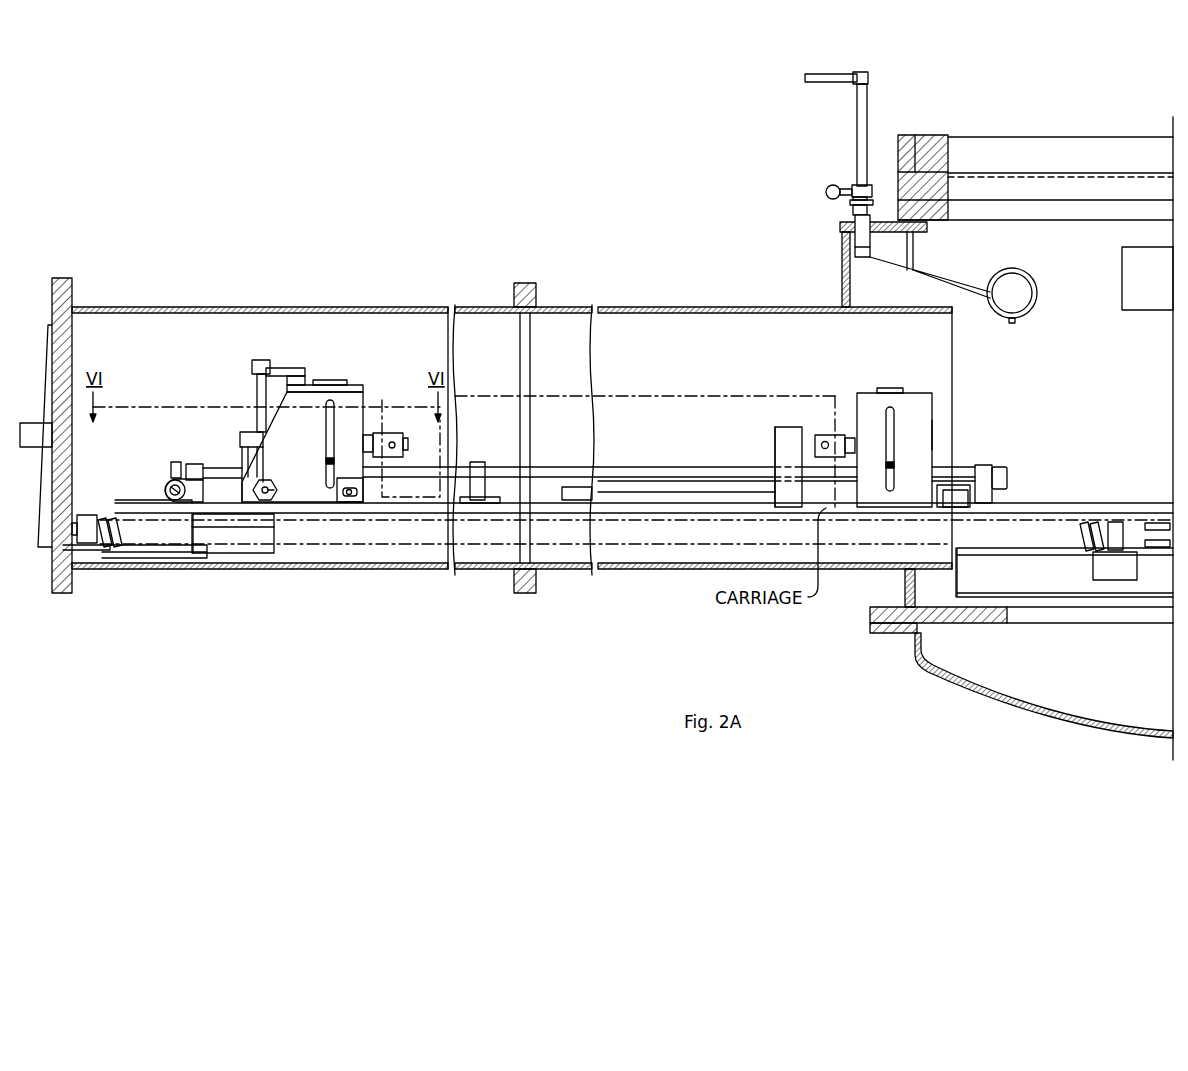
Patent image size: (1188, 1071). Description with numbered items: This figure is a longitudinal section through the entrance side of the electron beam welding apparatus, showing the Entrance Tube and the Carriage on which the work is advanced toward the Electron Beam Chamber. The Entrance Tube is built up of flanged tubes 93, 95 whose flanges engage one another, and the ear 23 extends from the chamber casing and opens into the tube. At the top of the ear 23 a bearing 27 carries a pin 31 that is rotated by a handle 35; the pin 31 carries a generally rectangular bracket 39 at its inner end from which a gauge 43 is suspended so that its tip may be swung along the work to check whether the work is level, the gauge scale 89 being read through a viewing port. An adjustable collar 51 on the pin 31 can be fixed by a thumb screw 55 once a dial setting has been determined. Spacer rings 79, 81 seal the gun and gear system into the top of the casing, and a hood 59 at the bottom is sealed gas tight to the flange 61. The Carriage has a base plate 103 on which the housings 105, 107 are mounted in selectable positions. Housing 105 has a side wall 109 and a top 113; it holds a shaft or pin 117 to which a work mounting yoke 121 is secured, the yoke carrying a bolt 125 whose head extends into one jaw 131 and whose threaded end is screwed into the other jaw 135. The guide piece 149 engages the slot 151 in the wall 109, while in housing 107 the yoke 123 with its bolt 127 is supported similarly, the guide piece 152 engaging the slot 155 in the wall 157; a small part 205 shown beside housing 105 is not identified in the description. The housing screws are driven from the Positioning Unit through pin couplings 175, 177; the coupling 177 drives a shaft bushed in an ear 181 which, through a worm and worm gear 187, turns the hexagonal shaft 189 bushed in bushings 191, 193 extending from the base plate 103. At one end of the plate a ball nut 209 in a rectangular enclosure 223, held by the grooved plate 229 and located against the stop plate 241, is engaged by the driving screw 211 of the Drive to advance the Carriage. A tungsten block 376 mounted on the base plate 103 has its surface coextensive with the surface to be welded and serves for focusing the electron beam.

The flanged tube 95 is at (282, 308).
The flanged tube 93 is at (694, 308).
The housing 105 is at (283, 420).
The side wall 109 is at (308, 396).
The top 113 is at (342, 384).
The slot 151 is at (326, 430).
The shaft or pin 117 is at (368, 436).
The work mounting yoke 121 is at (390, 433).
The bolt 125 is at (402, 445).
The jaw 131 is at (401, 450).
The guide piece 149 is at (328, 466).
The nut 205 is at (273, 487).
The pin coupling 175 is at (340, 496).
The worm gear 187 is at (178, 464).
The ear 181 is at (173, 480).
The bushing 191 is at (208, 467).
The pin coupling 177 is at (164, 490).
The driving screw 211 is at (106, 524).
The grooved plate 229 is at (233, 533).
The rectangular enclosure 223 is at (262, 550).
The overhanging stop plate 241 is at (193, 556).
The ball nut 209 is at (186, 540).
The shaft of hexagonal section 189 is at (648, 470).
The base plate 103 is at (705, 503).
The tungsten block 376 is at (775, 441).
The jaw 135 is at (816, 437).
The work mounting yoke 123 is at (826, 441).
The bolt 127 is at (832, 440).
The housing 107 is at (928, 436).
The slot 155 is at (893, 420).
The guide piece 152 is at (891, 470).
The wall 157 is at (933, 432).
The bushing 193 is at (985, 465).
The flange 61 is at (872, 618).
The hood 59 is at (916, 676).
The handle 35 is at (838, 73).
The pin 31 is at (856, 108).
The spacer ring 79 is at (911, 135).
The spacer ring 81 is at (932, 143).
The thumb screw 55 is at (831, 188).
The adjustable collar 51 is at (852, 185).
The bearing 27 is at (885, 220).
The ear chamber 23 is at (840, 226).
The bracket 39 is at (928, 276).
The gauge scale 89 is at (1002, 282).
The gauge 43 is at (1030, 272).